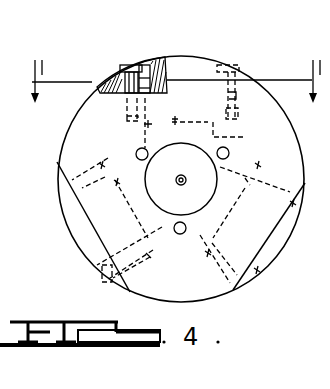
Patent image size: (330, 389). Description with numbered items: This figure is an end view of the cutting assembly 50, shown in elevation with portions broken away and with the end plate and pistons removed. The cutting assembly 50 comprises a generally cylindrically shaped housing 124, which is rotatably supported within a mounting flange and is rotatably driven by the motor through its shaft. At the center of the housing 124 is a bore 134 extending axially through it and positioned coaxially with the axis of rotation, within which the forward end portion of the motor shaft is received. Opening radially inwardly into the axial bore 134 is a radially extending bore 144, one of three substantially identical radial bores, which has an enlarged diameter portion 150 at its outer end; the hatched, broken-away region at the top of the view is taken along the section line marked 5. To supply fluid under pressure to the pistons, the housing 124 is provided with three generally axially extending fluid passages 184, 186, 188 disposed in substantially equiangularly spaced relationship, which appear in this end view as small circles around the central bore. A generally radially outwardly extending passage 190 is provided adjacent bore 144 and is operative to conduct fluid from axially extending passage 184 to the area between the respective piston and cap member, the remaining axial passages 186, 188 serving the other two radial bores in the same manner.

The cutting assembly 50 is at (74, 269).
The housing 124 is at (136, 296).
The enlarged diameter portion 150 is at (257, 80).
The section line 5- 5 is at (167, 81).
The radially outwardly extending passage 190 is at (140, 129).
The axially extending fluid passage 184 is at (136, 152).
The bore 134 is at (176, 148).
The radially extending bore 144 is at (239, 138).
The axially extending fluid passage 188 is at (231, 153).
The axially extending fluid passage 186 is at (180, 234).